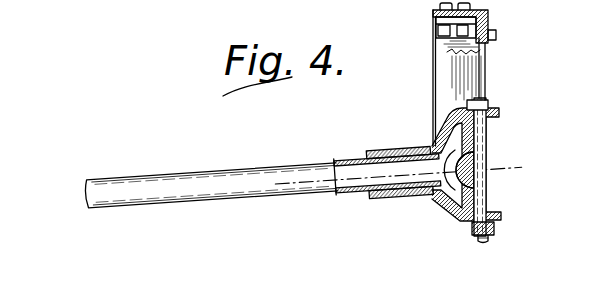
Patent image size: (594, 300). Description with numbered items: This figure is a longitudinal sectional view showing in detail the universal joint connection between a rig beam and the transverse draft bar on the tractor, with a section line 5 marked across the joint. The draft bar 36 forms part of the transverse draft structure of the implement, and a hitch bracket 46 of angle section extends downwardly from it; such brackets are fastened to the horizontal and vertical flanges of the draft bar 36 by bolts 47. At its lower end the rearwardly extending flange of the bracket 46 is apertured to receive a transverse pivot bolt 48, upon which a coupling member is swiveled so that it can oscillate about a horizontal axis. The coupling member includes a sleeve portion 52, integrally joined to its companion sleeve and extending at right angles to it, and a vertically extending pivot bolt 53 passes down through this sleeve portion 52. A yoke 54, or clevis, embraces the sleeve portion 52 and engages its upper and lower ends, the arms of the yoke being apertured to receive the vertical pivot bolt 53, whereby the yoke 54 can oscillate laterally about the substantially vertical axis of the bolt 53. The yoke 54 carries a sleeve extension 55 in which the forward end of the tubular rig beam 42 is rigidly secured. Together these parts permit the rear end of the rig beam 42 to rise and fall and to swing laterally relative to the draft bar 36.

The draft bar 36 is at (488, 13).
The rig beam 42 is at (86, 182).
The hitch bracket 46 is at (447, 48).
The bolts 47 is at (450, 40).
The transverse pivot bolt 48 is at (473, 163).
The sleeve portion 52 is at (497, 190).
The vertical pivot bolt 53 is at (492, 238).
The yoke 54 is at (445, 126).
The sleeve extension 55 is at (378, 198).
The section line 5- 5 is at (275, 181).